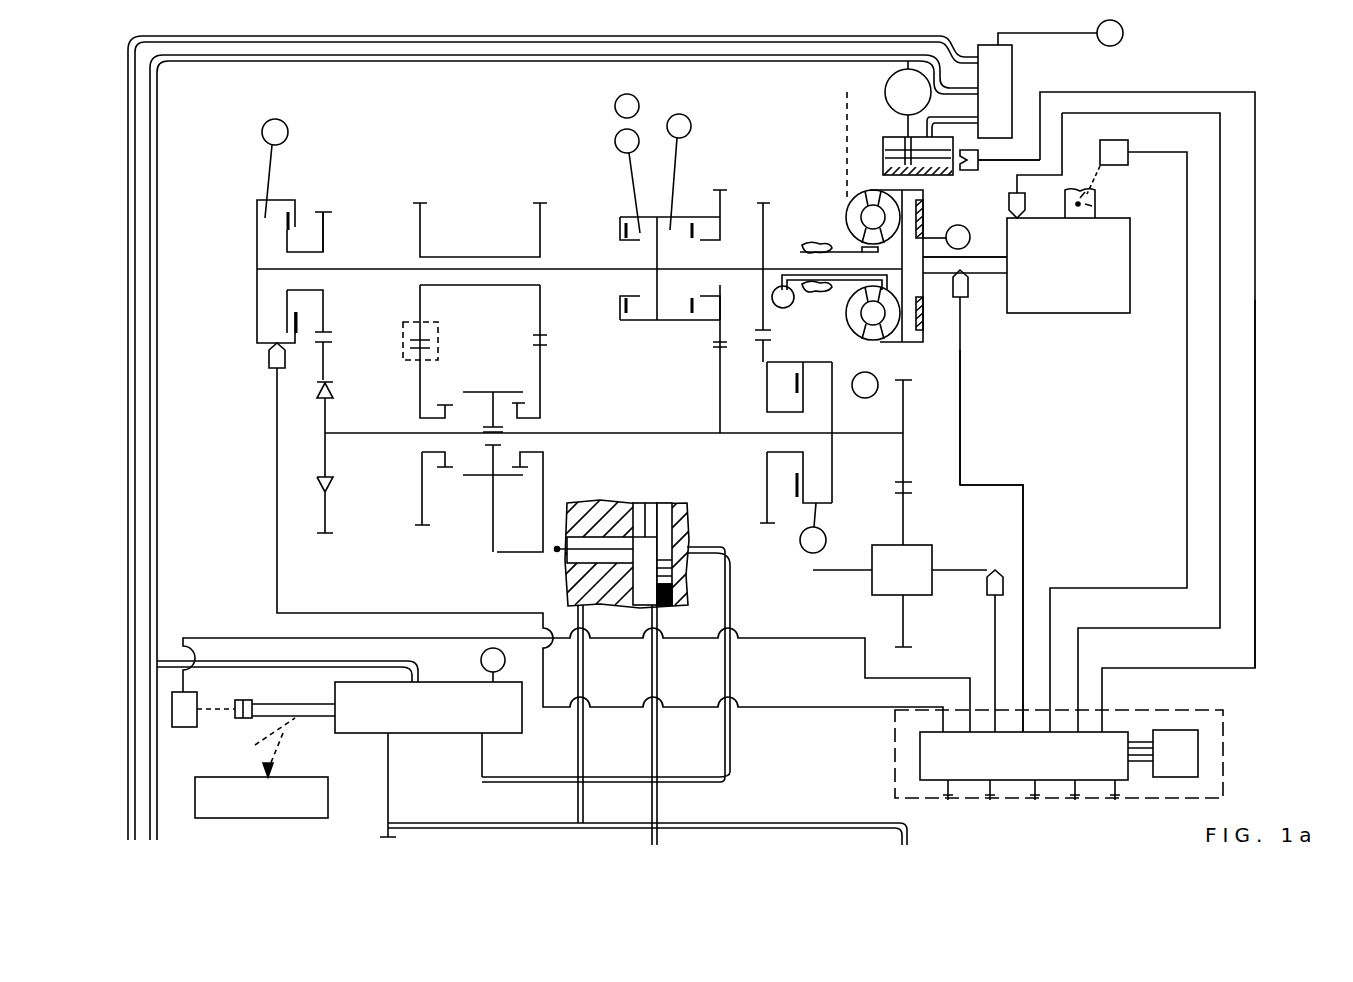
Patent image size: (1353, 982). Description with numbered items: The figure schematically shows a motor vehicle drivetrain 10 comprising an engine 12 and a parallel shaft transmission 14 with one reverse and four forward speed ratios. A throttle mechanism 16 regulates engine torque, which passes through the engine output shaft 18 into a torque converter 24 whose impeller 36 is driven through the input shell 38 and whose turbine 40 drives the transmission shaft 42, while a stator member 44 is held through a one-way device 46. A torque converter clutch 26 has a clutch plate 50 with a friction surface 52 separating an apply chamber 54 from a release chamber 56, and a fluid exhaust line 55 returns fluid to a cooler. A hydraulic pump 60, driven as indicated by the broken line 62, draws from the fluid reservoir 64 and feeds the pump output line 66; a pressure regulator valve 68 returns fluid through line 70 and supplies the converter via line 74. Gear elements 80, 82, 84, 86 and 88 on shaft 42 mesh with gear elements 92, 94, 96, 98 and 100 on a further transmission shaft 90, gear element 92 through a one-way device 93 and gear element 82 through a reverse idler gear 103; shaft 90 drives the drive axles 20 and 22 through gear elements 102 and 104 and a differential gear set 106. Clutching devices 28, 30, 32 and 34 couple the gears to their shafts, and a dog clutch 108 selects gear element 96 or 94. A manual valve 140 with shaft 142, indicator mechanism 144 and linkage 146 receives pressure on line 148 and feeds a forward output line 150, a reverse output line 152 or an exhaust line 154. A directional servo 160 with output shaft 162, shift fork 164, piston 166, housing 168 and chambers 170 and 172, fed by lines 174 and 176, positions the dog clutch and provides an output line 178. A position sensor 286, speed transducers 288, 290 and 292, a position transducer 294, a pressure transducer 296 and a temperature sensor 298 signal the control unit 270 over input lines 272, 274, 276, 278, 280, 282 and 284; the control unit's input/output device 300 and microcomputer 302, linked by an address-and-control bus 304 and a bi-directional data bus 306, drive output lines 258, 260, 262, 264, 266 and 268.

The motor vehicle drivetrain 10 is at (340, 130).
The engine 12 is at (1078, 318).
The parallel shaft transmission 14 is at (228, 295).
The throttle mechanism 16 is at (1095, 200).
The engine output shaft 18 is at (970, 262).
The drive axle 20 is at (858, 572).
The drive axle 22 is at (975, 592).
The torque converter 24 is at (835, 152).
The torque converter clutch 26 is at (930, 222).
The clutching device 28 is at (255, 238).
The clutching device 30 is at (625, 215).
The clutching device 32 is at (835, 445).
The clutching device 34 is at (682, 215).
The impeller 36 is at (870, 338).
The input shell 38 is at (888, 462).
The turbine 40 is at (873, 312).
The transmission shaft 42 is at (764, 262).
The stator member 44 is at (855, 290).
The one-way device 46 is at (848, 252).
The clutch plate 50 is at (880, 342).
The friction surface 52 is at (905, 365).
The apply chamber 54 is at (923, 280).
The fluid exhaust line 55 is at (799, 374).
The release chamber 56 is at (925, 330).
The hydraulic pump 60 is at (883, 75).
The broken line 62 is at (846, 120).
The fluid reservoir 64 is at (882, 158).
The pump output line 66 is at (680, 50).
The pressure regulator valve 68 is at (1008, 92).
The line 70 is at (968, 120).
The line 74 is at (440, 58).
The gear element 80 is at (325, 248).
The gear element 82 is at (422, 225).
The gear element 84 is at (538, 220).
The gear element 86 is at (728, 205).
The gear element 88 is at (765, 215).
The transmission shaft 90 is at (575, 432).
The gear element 92 is at (322, 490).
The one-way device 93 is at (333, 392).
The gear element 94 is at (420, 480).
The gear element 96 is at (519, 502).
The gear element 98 is at (718, 400).
The gear element 100 is at (790, 517).
The gear element 102 is at (928, 440).
The reverse idler gear 103 is at (445, 330).
The gear element 104 is at (918, 525).
The differential gear set 106 is at (920, 565).
The dog clutch 108 is at (490, 465).
The manual valve 140 is at (445, 733).
The shaft 142 is at (300, 708).
The indicator mechanism 144 is at (328, 795).
The broken line 146 is at (254, 747).
The line 148 is at (300, 660).
The forward output line 150 is at (390, 795).
The reverse output line 152 is at (505, 780).
The exhaust line 154 is at (480, 670).
The directional servo 160 is at (558, 580).
The output shaft 162 is at (558, 545).
The shift fork 164 is at (495, 520).
The piston 166 is at (622, 537).
The servo housing 168 is at (570, 592).
The chamber 170 is at (600, 503).
The chamber 172 is at (672, 503).
The line 174 is at (584, 715).
The line 176 is at (732, 728).
The output line 178 is at (660, 655).
The output line 258 is at (940, 798).
The output line 260 is at (960, 800).
The output line 262 is at (1005, 800).
The output line 264 is at (1040, 800).
The output line 266 is at (1080, 798).
The output line 268 is at (1125, 790).
The control unit 270 is at (1232, 757).
The input line 272 is at (866, 660).
The input line 274 is at (882, 705).
The input line 276 is at (985, 650).
The input line 278 is at (1023, 512).
The input line 280 is at (1187, 440).
The input line 282 is at (1220, 338).
The input line 284 is at (1255, 410).
The position sensor 286 is at (205, 650).
The speed transducer 288 is at (272, 380).
The speed transducer 290 is at (990, 600).
The speed transducer 292 is at (970, 300).
The position transducer 294 is at (1128, 140).
The pressure transducer 296 is at (1030, 200).
The temperature sensor 298 is at (978, 172).
The input/output device 300 is at (930, 750).
The microcomputer 302 is at (1185, 712).
The address-and-control bus 304 is at (1140, 745).
The bi-directional data bus 306 is at (1140, 770).